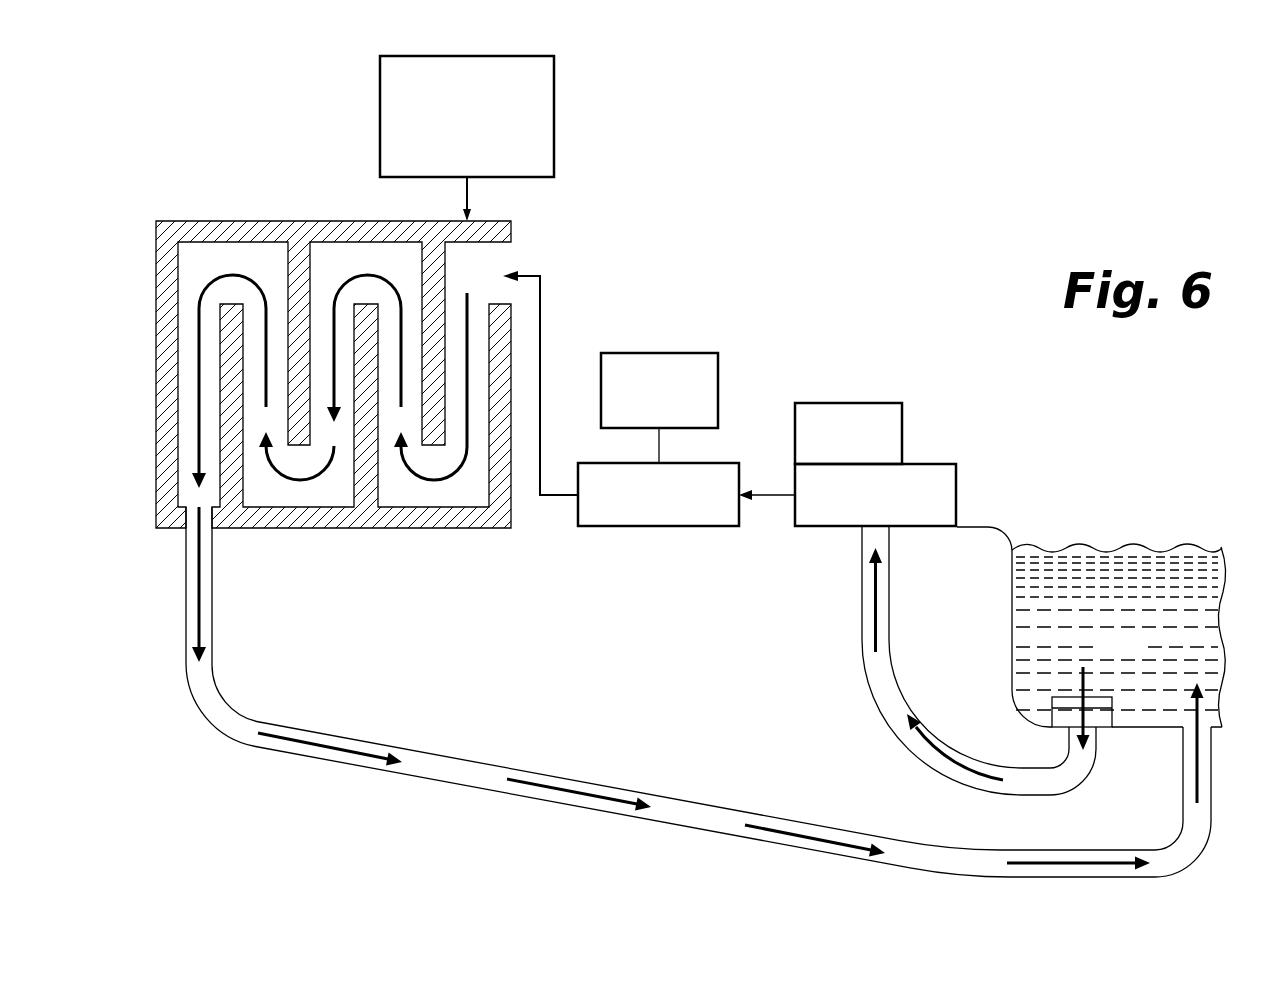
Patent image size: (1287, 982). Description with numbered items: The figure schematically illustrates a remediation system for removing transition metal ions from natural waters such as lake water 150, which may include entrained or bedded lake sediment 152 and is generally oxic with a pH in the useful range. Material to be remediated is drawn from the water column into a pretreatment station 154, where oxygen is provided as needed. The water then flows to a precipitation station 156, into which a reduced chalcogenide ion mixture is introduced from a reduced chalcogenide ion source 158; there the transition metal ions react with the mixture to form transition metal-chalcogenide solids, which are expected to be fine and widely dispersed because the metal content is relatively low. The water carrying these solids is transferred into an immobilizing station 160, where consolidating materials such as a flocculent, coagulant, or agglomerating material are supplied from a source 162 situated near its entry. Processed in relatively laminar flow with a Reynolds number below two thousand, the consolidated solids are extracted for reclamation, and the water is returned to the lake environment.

The lake water 150 is at (1141, 641).
The lake sediment 152 is at (1152, 772).
The pretreatment station 154 is at (957, 495).
The precipitation station 156 is at (659, 526).
The reduced chalcogenide ion source 158 is at (659, 353).
The immobilizing station 160 is at (336, 221).
The source 162 is at (554, 119).